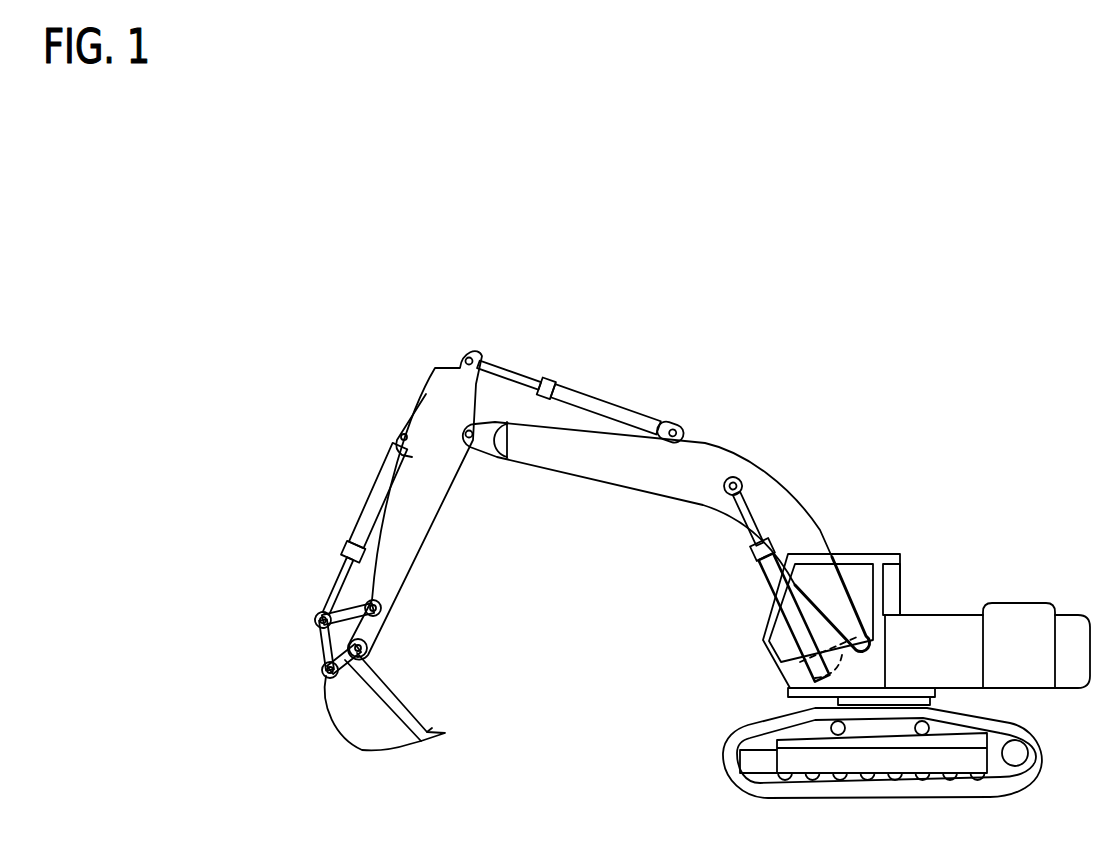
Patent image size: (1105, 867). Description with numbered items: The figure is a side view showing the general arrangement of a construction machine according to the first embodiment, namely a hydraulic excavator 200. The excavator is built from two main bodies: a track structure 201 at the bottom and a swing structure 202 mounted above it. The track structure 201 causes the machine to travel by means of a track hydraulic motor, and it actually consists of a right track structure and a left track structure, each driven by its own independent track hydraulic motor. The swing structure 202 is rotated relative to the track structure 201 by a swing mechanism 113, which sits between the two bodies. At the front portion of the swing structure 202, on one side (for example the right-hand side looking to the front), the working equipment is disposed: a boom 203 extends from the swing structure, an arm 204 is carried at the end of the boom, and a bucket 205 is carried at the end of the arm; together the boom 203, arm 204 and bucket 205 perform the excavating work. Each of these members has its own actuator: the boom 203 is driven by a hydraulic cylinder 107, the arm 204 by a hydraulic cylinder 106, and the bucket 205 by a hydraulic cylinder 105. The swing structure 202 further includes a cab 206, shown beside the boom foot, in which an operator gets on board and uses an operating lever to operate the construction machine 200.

The hydraulic excavator 200 is at (764, 386).
The track structure 201 is at (722, 752).
The swing structure 202 is at (938, 614).
The boom 203 is at (617, 492).
The arm 204 is at (433, 519).
The bucket 205 is at (406, 702).
The cab 206 is at (861, 553).
The hydraulic cylinder 105 is at (372, 480).
The hydraulic cylinder 106 is at (643, 412).
The hydraulic cylinder 107 is at (765, 578).
The swing mechanism 113 is at (837, 697).